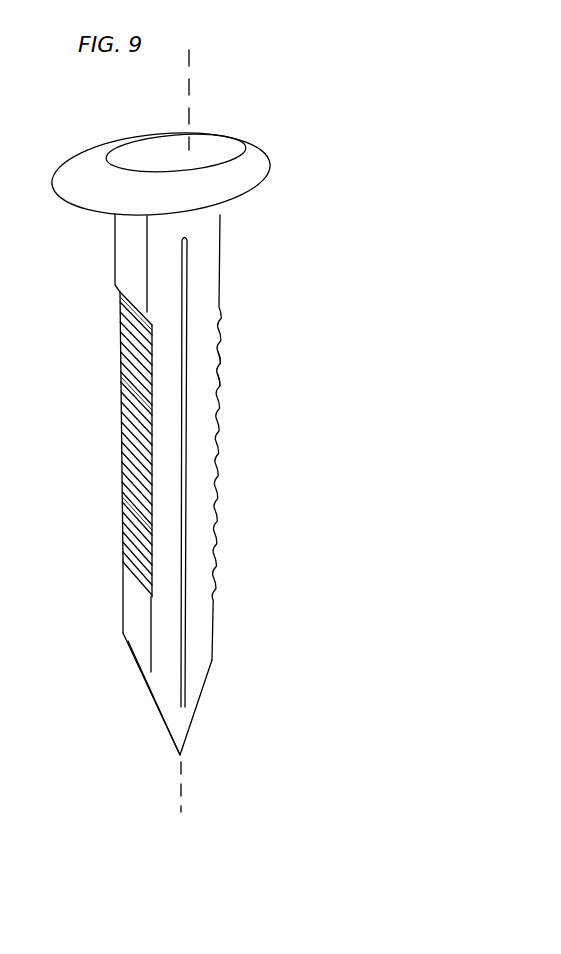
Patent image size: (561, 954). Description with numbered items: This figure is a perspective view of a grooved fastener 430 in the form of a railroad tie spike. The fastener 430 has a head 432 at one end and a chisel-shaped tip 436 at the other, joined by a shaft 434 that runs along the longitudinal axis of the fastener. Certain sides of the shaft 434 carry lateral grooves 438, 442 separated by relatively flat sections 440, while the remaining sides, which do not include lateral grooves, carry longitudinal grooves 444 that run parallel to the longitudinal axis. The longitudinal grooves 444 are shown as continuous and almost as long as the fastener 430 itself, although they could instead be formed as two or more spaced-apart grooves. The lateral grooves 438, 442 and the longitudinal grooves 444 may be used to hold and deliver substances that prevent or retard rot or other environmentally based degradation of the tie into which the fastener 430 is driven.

The grooved fastener 430 is at (265, 71).
The head 432 is at (258, 160).
The shaft 434 is at (202, 522).
The chisel-shaped tip 436 is at (162, 728).
The lateral grooves 438 is at (120, 347).
The relatively flat sections 440 is at (118, 360).
The lateral grooves 442 is at (218, 363).
The longitudinal grooves 444 is at (183, 480).